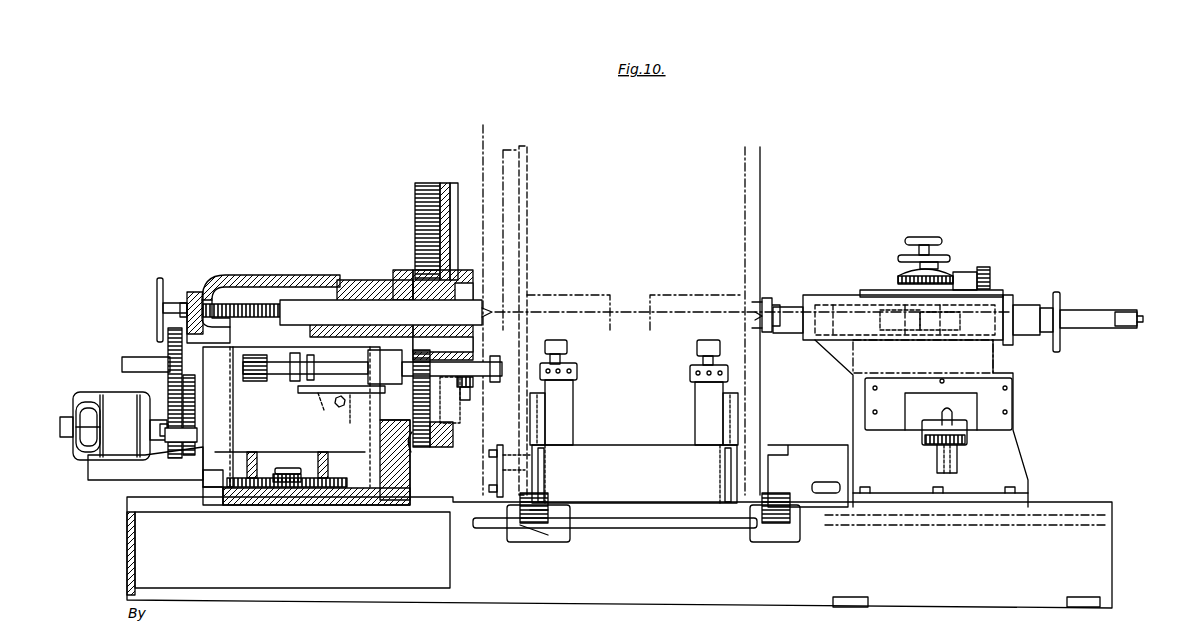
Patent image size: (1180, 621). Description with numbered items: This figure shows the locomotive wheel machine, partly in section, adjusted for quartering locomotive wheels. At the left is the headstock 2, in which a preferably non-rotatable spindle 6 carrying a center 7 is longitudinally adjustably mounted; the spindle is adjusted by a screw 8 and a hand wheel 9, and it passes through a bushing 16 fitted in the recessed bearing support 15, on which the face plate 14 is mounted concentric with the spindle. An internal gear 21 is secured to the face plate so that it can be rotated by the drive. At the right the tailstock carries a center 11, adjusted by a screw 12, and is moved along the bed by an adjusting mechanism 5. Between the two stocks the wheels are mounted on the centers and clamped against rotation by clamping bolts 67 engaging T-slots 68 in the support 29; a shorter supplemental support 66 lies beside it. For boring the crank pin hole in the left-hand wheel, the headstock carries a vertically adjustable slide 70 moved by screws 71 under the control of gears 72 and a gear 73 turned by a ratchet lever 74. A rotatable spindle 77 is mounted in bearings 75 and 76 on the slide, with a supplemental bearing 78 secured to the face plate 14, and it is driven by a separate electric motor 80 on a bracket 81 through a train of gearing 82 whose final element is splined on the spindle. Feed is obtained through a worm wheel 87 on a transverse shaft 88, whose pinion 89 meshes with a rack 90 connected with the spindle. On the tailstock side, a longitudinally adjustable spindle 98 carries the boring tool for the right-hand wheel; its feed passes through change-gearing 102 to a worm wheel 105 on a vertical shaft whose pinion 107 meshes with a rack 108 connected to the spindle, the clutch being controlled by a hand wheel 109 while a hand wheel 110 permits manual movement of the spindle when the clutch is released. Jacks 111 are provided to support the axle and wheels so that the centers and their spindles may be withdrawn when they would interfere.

The headstock 2 is at (900, 398).
The adjusting mechanism 5 is at (968, 440).
The spindle 6 is at (306, 298).
The center 7 is at (478, 300).
The screw 8 is at (256, 312).
The hand wheel 9 is at (156, 286).
The center 11 is at (483, 105).
The screw 12 is at (87, 350).
The face plate 14 is at (452, 435).
The bearing support 15 is at (362, 283).
The bushing 16 is at (452, 285).
The internal gear 21 is at (411, 450).
The support 29 is at (650, 452).
The supplemental support 66 is at (810, 450).
The clamping bolts 67 is at (649, 475).
The T-slots 68 is at (562, 475).
The slide 70 is at (306, 426).
The screws 71 is at (268, 458).
The gears 72 is at (228, 482).
The gear 73 is at (298, 469).
The ratchet lever 74 is at (292, 465).
The bearing 75 is at (218, 417).
The bearing 76 is at (385, 367).
The spindle 77 is at (136, 362).
The supplemental bearing 78 is at (468, 392).
The electric motor 80 is at (112, 395).
The bracket 81 is at (120, 478).
The train of gearing 82 is at (170, 392).
The worm wheel 87 is at (354, 421).
The transverse shaft 88 is at (337, 408).
The pinion 89 is at (318, 398).
The rack 90 is at (298, 390).
The spindle 98 is at (1090, 318).
The change-gearing 102 is at (990, 268).
The worm wheel 105 is at (898, 276).
The pinion 107 is at (925, 320).
The rack 108 is at (898, 325).
The hand wheel 109 is at (950, 258).
The hand wheel 110 is at (940, 240).
The jacks 111 is at (570, 350).